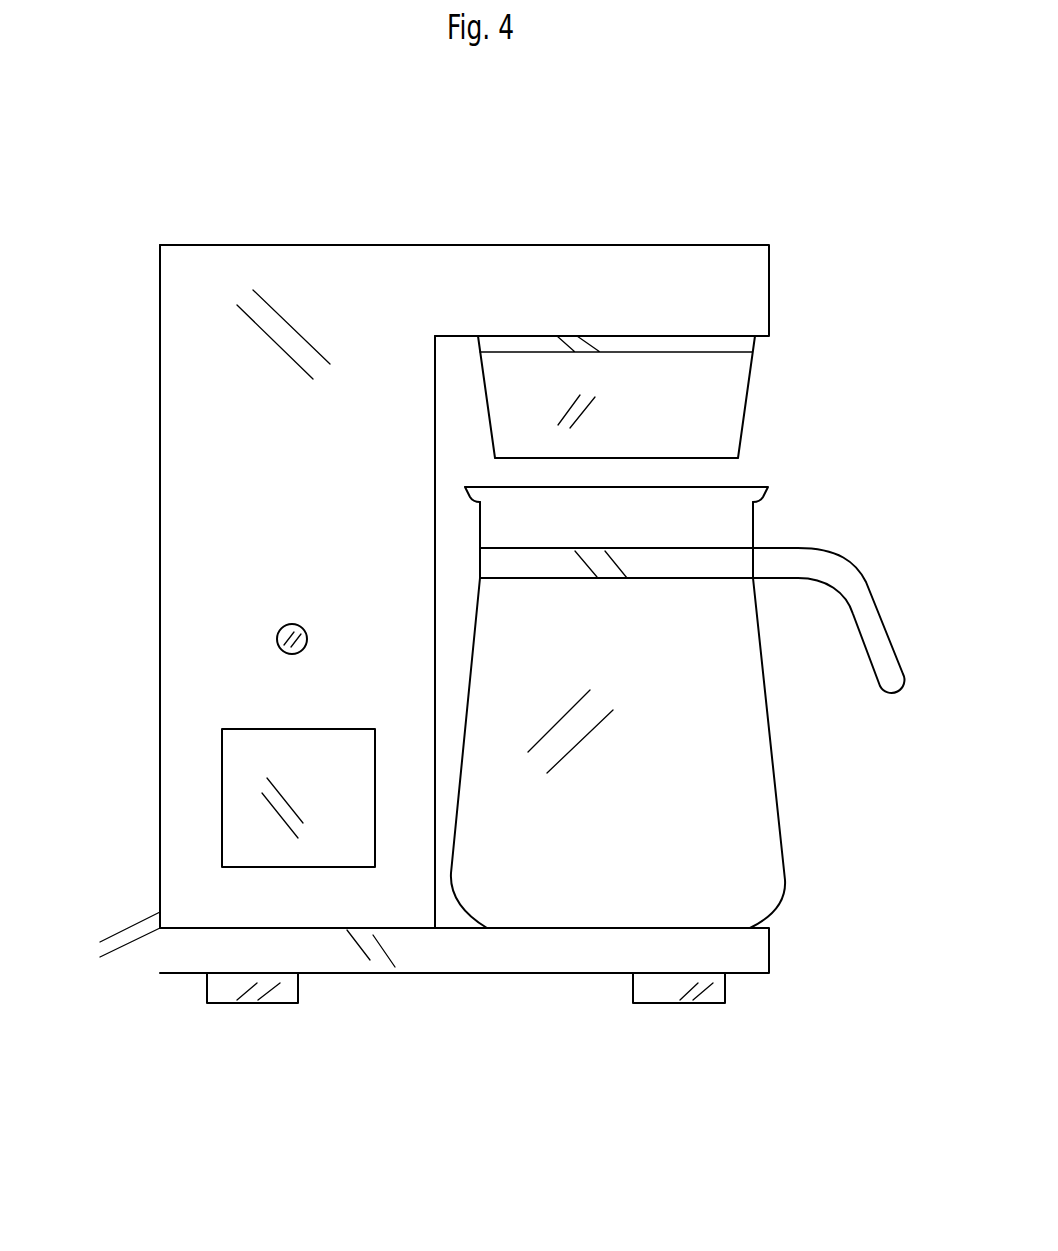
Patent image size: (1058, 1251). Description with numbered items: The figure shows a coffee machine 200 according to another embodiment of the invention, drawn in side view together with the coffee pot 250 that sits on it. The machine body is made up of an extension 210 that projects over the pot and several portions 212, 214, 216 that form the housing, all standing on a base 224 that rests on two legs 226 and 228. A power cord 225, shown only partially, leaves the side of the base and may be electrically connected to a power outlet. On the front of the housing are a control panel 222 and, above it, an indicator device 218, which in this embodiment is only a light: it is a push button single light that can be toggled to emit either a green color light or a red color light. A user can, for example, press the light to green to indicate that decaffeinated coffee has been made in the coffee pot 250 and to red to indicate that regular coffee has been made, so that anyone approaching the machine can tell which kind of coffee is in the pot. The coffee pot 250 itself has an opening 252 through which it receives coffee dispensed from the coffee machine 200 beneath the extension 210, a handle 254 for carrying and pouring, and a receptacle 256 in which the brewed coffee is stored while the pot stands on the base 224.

The coffee machine 200 is at (640, 226).
The extension 210 is at (577, 288).
The portion 212 is at (718, 415).
The portion 214 is at (740, 347).
The portion 216 is at (228, 455).
The indicator device 218 is at (277, 630).
The control panel 222 is at (260, 760).
The base 224 is at (752, 948).
The power cord 225 is at (130, 940).
The leg 226 is at (292, 988).
The leg 228 is at (655, 990).
The coffee pot 250 is at (686, 688).
The opening 252 is at (742, 487).
The handle 254 is at (857, 598).
The receptacle 256 is at (715, 717).